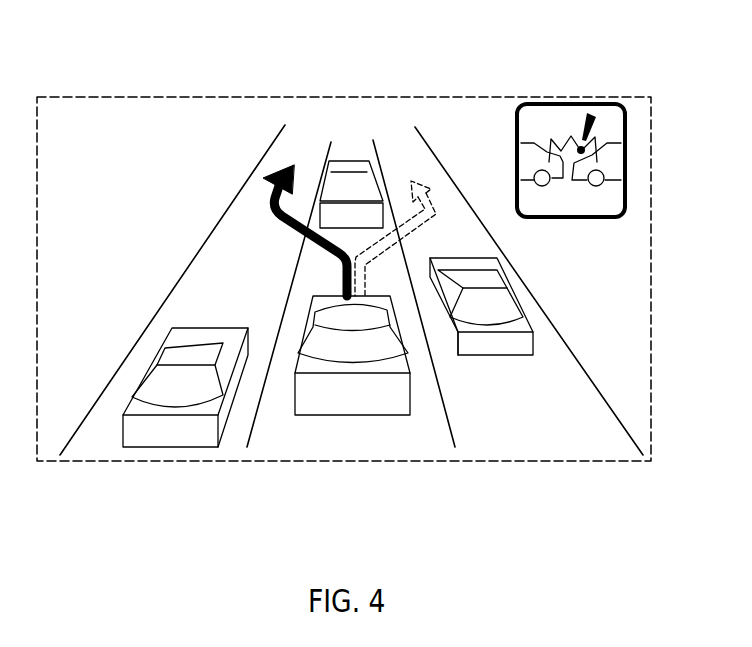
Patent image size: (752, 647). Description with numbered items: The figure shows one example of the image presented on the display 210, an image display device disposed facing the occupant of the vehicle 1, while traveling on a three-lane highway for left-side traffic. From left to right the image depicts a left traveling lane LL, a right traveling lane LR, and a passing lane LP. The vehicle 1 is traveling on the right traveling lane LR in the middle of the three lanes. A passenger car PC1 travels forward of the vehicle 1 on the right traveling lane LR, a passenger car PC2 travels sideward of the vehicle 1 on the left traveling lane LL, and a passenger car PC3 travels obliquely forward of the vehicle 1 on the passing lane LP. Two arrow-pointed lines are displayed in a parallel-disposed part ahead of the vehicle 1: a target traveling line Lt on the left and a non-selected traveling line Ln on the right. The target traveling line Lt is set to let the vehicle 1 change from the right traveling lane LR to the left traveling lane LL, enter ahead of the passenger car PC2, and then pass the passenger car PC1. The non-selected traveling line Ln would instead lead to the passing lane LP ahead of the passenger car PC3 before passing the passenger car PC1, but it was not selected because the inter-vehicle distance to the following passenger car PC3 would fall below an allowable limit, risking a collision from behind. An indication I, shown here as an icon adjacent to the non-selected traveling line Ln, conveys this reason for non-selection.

The vehicle 1 is at (326, 406).
The display 210 is at (113, 472).
The passenger car PC1 is at (365, 168).
The passenger car PC2 is at (166, 347).
The passenger car PC3 is at (504, 287).
The target traveling line Lt is at (266, 195).
The non-selected traveling line Ln is at (440, 198).
The left traveling lane LL is at (283, 133).
The right traveling lane LR is at (331, 136).
The passing lane LP is at (422, 142).
The indication I is at (610, 106).